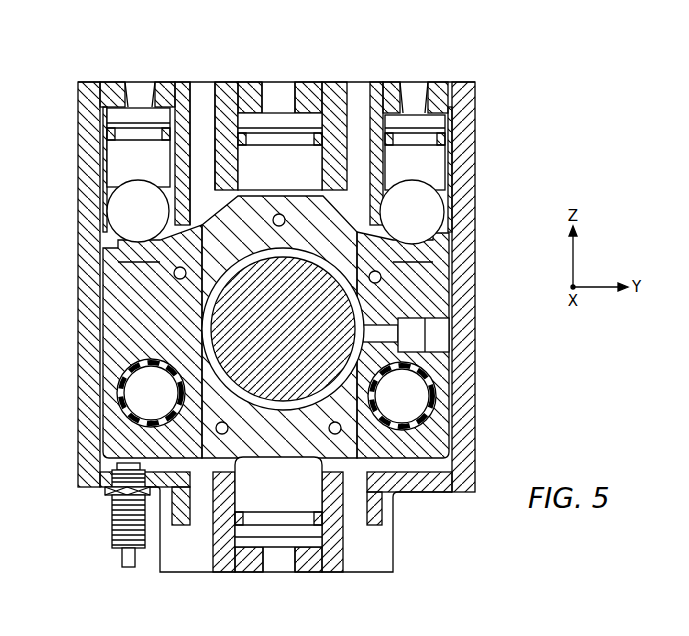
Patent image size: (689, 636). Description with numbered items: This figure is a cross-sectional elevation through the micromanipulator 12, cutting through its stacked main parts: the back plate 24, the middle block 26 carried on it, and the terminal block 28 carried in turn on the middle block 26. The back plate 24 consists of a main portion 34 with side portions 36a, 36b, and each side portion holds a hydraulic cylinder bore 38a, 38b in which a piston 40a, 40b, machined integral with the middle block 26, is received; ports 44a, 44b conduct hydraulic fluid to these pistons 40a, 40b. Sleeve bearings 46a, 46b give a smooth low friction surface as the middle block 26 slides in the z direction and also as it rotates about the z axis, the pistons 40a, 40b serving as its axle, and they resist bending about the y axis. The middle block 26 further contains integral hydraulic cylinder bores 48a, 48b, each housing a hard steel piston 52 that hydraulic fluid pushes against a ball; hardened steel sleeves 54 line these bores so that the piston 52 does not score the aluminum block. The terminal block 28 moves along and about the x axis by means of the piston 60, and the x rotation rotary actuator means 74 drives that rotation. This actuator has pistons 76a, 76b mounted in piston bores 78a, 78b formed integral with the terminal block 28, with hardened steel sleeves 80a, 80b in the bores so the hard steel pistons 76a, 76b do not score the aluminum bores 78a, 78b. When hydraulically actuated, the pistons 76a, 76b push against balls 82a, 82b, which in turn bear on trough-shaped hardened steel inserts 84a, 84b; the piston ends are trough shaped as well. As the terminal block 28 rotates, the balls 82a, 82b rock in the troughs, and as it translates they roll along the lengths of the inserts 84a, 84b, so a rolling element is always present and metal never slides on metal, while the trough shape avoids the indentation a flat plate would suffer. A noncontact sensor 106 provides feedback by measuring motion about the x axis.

The micromanipulator 12 is at (72, 492).
The back plate 24 is at (322, 90).
The middle block 26 is at (118, 318).
The terminal block 28 is at (78, 283).
The main portion 34 is at (213, 65).
The side portion 36a is at (208, 88).
The side portion 36b is at (332, 573).
The hydraulic cylinder bore 38a is at (253, 116).
The hydraulic cylinder bore 38b is at (250, 548).
The piston 40a is at (250, 190).
The piston 40b is at (278, 510).
The port 44a is at (278, 88).
The port 44b is at (280, 573).
The sleeve bearing 46a is at (239, 154).
The sleeve bearing 46b is at (240, 492).
The hydraulic cylinder bore 48a is at (118, 420).
The hydraulic cylinder bore 48b is at (437, 384).
The piston 52 is at (138, 402).
The hardened steel sleeve 54 is at (124, 388).
The piston 60 is at (262, 255).
The x rotation rotary actuator means 74 is at (150, 57).
The piston 76a is at (160, 168).
The piston 76b is at (403, 169).
The piston bore 78a is at (107, 113).
The piston bore 78b is at (474, 143).
The hardened steel sleeve 80a is at (110, 82).
The hardened steel sleeve 80b is at (445, 85).
The ball 82a is at (156, 222).
The ball 82b is at (430, 223).
The hardened steel insert 84a is at (105, 245).
The hardened steel insert 84b is at (435, 246).
The sensor 106 is at (112, 525).